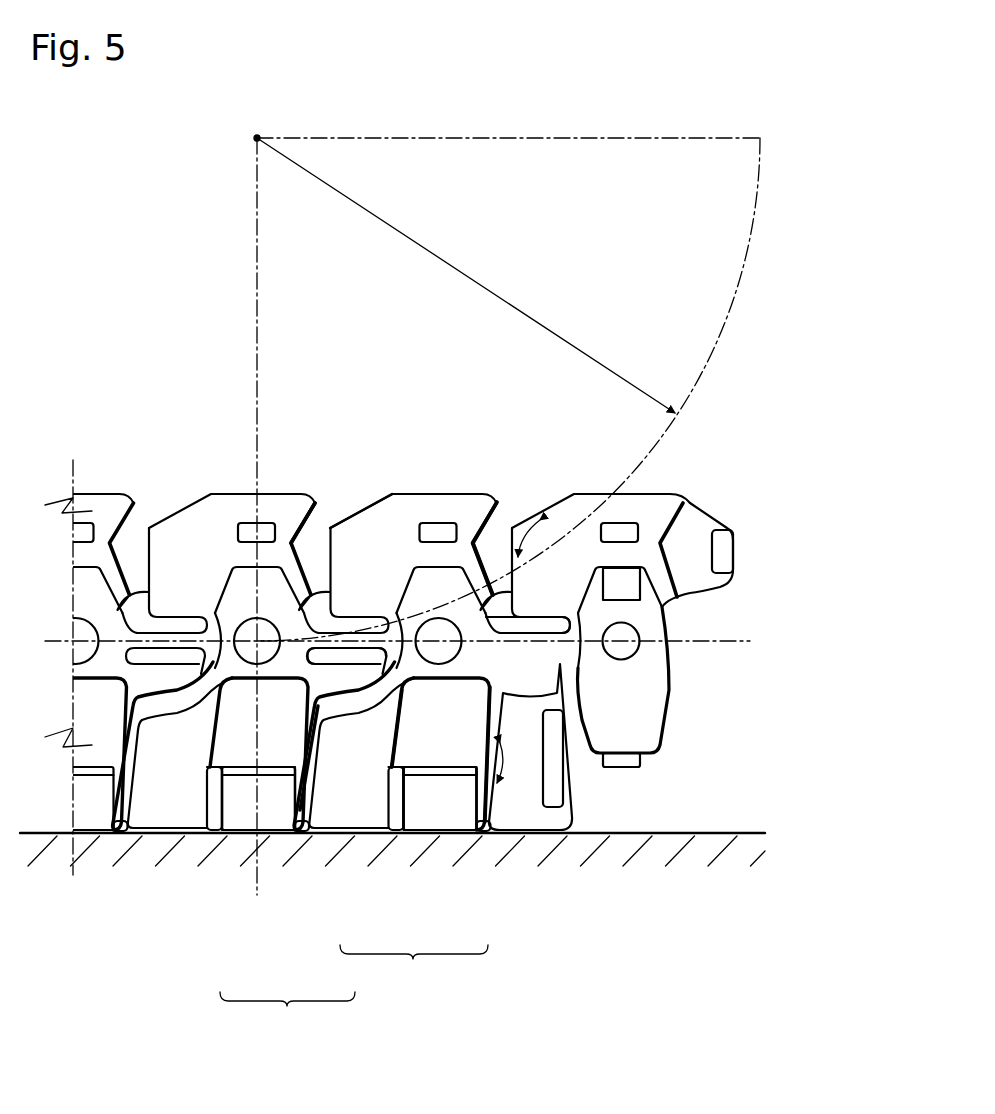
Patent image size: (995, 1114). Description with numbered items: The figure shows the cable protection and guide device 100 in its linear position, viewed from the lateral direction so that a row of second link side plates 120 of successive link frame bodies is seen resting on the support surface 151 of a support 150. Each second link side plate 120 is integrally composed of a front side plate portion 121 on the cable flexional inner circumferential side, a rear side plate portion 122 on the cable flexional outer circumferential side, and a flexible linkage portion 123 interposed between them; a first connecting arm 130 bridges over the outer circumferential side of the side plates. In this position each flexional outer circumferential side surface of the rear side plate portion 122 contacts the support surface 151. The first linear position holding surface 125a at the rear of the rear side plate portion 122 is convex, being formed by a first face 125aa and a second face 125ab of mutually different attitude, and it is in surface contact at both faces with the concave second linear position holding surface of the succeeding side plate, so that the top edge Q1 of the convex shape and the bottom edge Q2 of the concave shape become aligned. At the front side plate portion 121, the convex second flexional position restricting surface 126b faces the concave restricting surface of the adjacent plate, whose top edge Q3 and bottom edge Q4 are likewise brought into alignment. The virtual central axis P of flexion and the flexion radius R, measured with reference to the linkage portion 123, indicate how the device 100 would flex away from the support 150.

The cable protection and guide device 100 is at (130, 167).
The second link side plate 120 is at (228, 488).
The front side plate portion 121 is at (703, 510).
The rear side plate portion 122 is at (543, 767).
The linkage portion 123 is at (557, 630).
The second flexional position restricting surface 126b is at (318, 505).
The first connecting arm 130 is at (240, 835).
The support 150 is at (672, 820).
The support surface 151 is at (727, 833).
The first linear position holding surface 125a is at (287, 1011).
The first face 125aa is at (230, 840).
The second face 125ab is at (280, 840).
The virtual central axis P is at (254, 127).
The flexion radius R is at (466, 275).
The top edge of the convex shape Q1 is at (318, 765).
The bottom edge of the concave shape Q2 is at (323, 772).
The top edge of the convex shape Q3 is at (508, 530).
The bottom edge of the concave shape Q4 is at (478, 540).